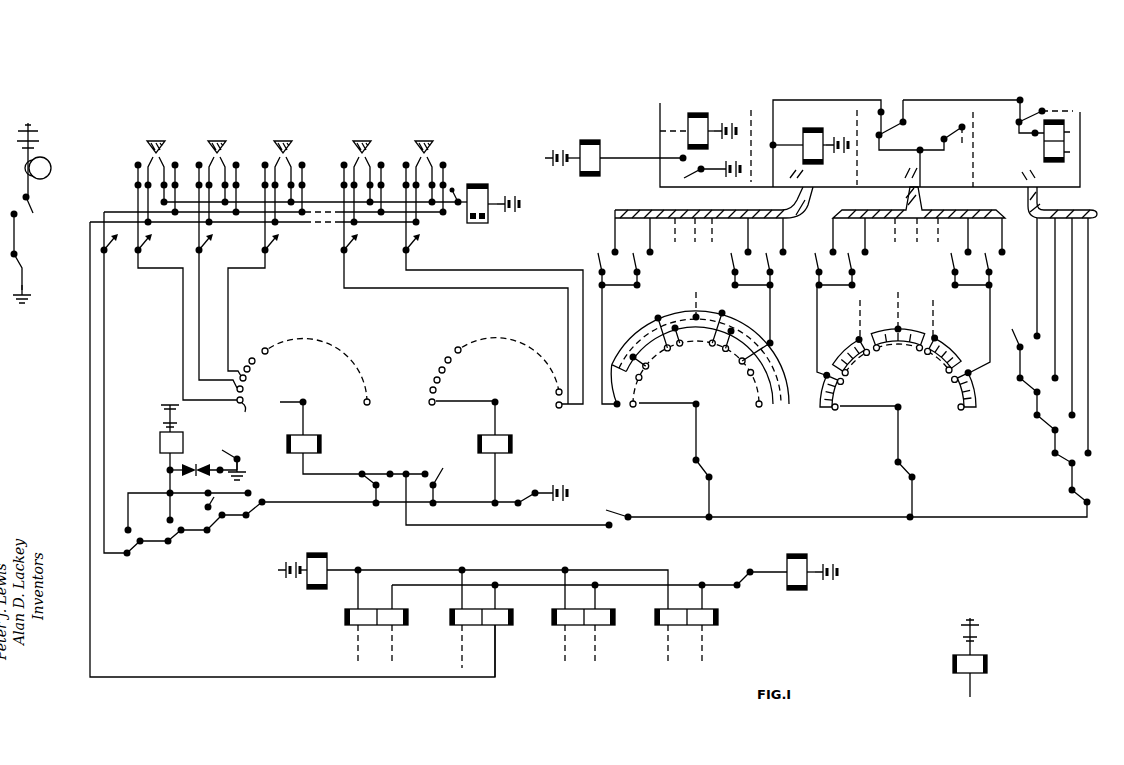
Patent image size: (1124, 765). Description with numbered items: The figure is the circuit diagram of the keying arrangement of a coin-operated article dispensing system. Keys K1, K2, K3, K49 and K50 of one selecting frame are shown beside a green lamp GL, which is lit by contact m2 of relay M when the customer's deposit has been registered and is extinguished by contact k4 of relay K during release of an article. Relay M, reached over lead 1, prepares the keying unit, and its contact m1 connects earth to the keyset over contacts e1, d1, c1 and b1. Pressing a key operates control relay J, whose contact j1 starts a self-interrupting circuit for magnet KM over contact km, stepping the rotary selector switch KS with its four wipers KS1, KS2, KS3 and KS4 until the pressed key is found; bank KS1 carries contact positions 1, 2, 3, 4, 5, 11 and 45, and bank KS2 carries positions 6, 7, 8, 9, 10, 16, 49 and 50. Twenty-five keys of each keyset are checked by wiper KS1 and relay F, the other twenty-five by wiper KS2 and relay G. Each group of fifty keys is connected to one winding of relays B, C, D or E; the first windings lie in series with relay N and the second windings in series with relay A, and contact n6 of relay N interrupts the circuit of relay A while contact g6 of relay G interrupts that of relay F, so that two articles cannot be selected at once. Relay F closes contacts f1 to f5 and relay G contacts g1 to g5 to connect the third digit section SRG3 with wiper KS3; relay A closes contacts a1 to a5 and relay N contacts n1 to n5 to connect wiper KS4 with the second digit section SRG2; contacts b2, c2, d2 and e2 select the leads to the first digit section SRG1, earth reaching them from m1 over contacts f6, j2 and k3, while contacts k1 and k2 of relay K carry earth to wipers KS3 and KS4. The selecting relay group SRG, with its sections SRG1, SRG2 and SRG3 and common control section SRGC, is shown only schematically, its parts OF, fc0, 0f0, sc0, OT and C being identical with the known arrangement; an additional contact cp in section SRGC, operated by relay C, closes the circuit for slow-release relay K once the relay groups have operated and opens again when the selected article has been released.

The green lamp GL is at (47, 162).
The contact of relay M m2 is at (28, 225).
The contact of relay K k4 is at (30, 277).
The key K1 is at (157, 189).
The key K2 is at (218, 189).
The key K3 is at (284, 189).
The key K49 is at (363, 189).
The key K50 is at (425, 189).
The control relay J is at (485, 195).
The slow-release relay K is at (616, 148).
The relay C is at (586, 390).
The contact cp is at (712, 174).
The control section SRGC is at (714, 219).
The third digit section SRG3 is at (761, 220).
The second digit section SRG2 is at (919, 219).
The first digit section SRG1 is at (981, 220).
The selecting relay group SRG is at (1070, 294).
The part of selecting relay group OT is at (809, 153).
The contact sc0 is at (898, 148).
The contact 0f0 is at (943, 132).
The contact fc0 is at (1031, 117).
The part of selecting relay group OF is at (1058, 150).
The contact of relay F f1 is at (604, 262).
The contact of relay G g1 is at (628, 262).
The contact of relay F f5 is at (741, 262).
The contact of relay G g5 is at (761, 262).
The contact of relay A a1 is at (824, 262).
The contact of relay N n1 is at (844, 262).
The contact of relay A a5 is at (958, 262).
The contact of relay N n5 is at (980, 262).
The selector switch KS is at (412, 368).
The wiper and bank KS1 is at (298, 407).
The wiper and bank KS2 is at (472, 407).
The wiper and bank KS3 is at (700, 376).
The wiper and bank KS4 is at (898, 377).
The lead 1 is at (241, 406).
The switch position 2 is at (245, 390).
The contact of bank KS1 3 is at (247, 380).
The switch position 4 is at (251, 370).
The switch position 5 is at (249, 357).
The switch position 11 is at (260, 347).
The switch position 45 is at (377, 403).
The switch position 6 is at (428, 402).
The switch position 7 is at (429, 390).
The switch position 8 is at (433, 380).
The switch position 9 is at (438, 370).
The switch position 10 is at (442, 360).
The switch position 16 is at (452, 350).
The switch position 49 is at (550, 393).
The switch position 50 is at (550, 406).
The relay F is at (317, 454).
The relay G is at (489, 471).
The contact of relay K k1 is at (711, 489).
The contact of relay K k2 is at (916, 490).
The contact of relay K k3 is at (1089, 494).
The contact of relay B b2 is at (1026, 348).
The contact of relay C c2 is at (1034, 395).
The contact of relay D d2 is at (1052, 433).
The contact of relay E e2 is at (1068, 470).
The magnet KM is at (186, 464).
The contact of relay J j1 is at (225, 459).
The contact of magnet KM km is at (200, 494).
The contact of relay B b1 is at (146, 549).
The contact of relay C c1 is at (186, 537).
The contact of relay D d1 is at (225, 523).
The contact of relay E e1 is at (255, 509).
The contact of relay G g6 is at (392, 482).
The contact of relay F f6 is at (440, 482).
The contact of relay M m1 is at (539, 490).
The contact of relay J j2 is at (619, 509).
The relay N is at (507, 581).
The relay B is at (369, 615).
The relay D is at (576, 615).
The relay E is at (679, 622).
The contact of relay N n6 is at (761, 580).
The relay A is at (812, 579).
The relay M is at (978, 657).